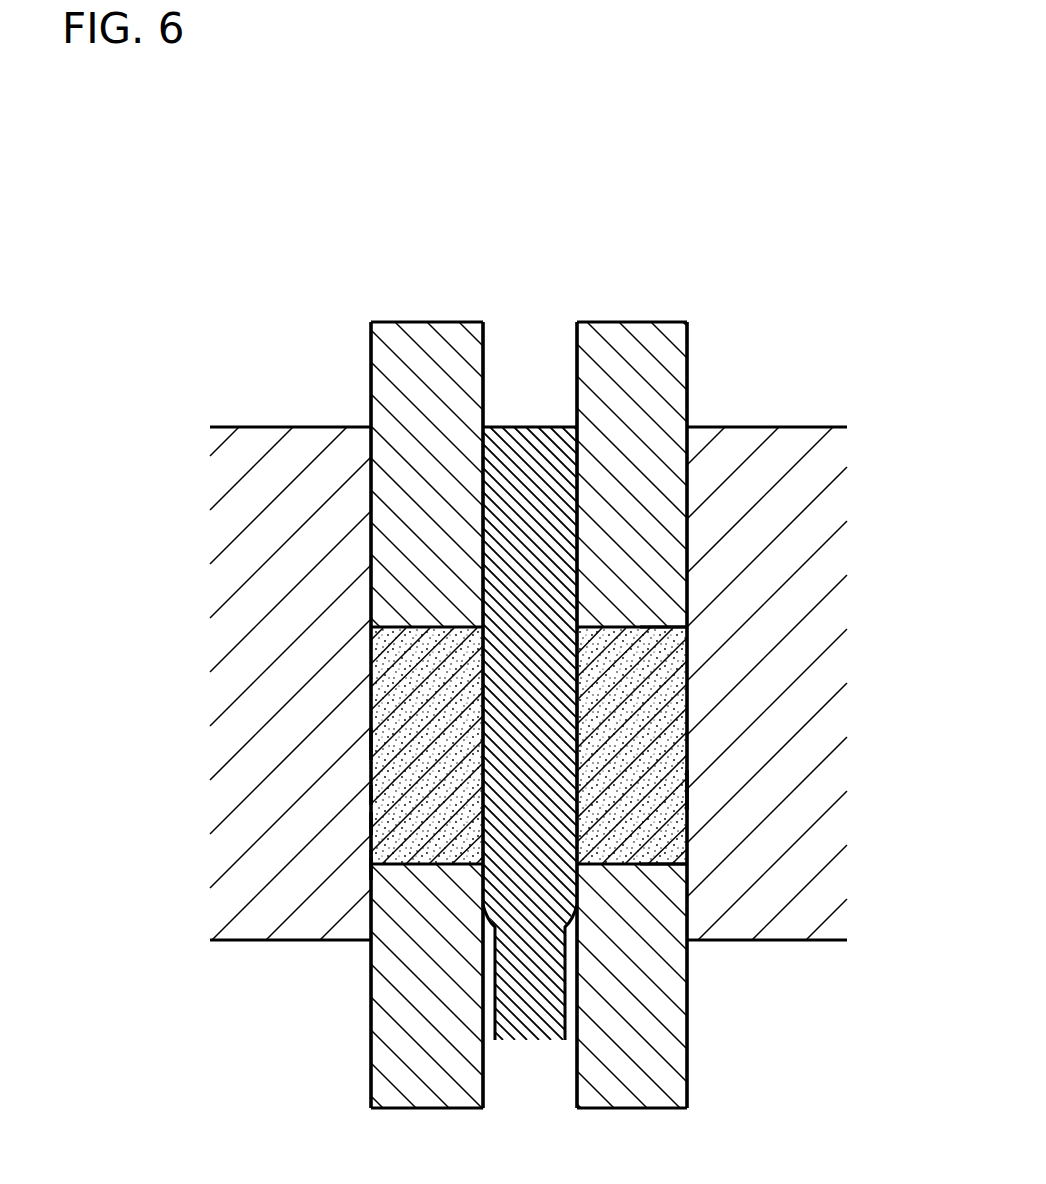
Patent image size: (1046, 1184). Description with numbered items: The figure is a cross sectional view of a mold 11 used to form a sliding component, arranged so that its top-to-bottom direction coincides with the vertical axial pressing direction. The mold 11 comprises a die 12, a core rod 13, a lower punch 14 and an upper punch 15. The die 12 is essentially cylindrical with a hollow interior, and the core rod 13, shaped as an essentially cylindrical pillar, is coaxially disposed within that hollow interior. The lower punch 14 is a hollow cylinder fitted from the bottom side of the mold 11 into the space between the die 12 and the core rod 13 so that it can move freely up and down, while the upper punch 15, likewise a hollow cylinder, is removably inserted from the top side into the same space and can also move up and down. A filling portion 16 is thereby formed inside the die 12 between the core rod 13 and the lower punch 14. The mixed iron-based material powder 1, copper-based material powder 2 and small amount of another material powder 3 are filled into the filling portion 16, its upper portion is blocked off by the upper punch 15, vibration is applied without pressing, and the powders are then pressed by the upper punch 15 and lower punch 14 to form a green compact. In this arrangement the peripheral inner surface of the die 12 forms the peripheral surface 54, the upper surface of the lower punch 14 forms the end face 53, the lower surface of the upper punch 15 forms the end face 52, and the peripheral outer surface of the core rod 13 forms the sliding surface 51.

The mold 11 is at (715, 315).
The die 12 is at (807, 671).
The core rod 13 is at (533, 443).
The lower punch 14 is at (610, 992).
The upper punch 15 is at (416, 356).
The filling portion 16 is at (407, 713).
The iron-based material powder 1 is at (388, 743).
The copper-based material powder 2 is at (388, 795).
The another material powder 3 is at (388, 822).
The sliding surface 51 is at (370, 867).
The end face 52 is at (657, 626).
The end face 53 is at (648, 868).
The peripheral surface 54 is at (688, 787).